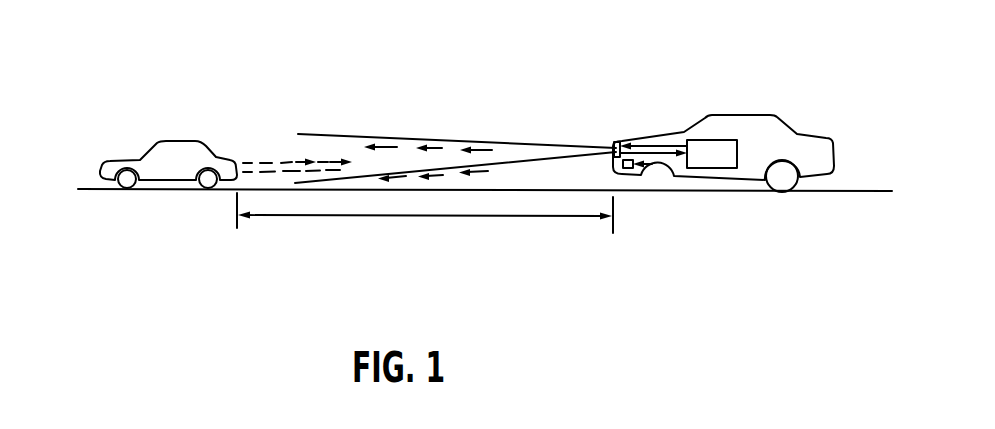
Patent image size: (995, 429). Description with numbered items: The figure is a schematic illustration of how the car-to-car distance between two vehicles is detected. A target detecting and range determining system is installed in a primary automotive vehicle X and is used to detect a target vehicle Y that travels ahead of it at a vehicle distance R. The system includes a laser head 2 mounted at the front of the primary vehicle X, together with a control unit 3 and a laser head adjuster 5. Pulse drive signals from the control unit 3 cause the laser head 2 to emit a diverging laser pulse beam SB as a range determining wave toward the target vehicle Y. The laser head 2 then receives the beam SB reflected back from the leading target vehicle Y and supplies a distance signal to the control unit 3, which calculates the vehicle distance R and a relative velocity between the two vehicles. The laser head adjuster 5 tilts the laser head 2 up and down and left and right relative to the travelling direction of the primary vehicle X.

The primary automotive vehicle X is at (802, 121).
The target vehicle Y is at (181, 142).
The laser head 2 is at (617, 141).
The control unit 3 is at (714, 148).
The laser head adjuster 5 is at (628, 168).
The laser pulse beam SB is at (360, 134).
The vehicle distance R is at (425, 224).